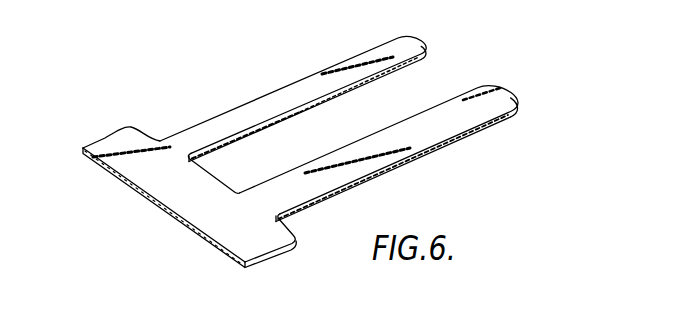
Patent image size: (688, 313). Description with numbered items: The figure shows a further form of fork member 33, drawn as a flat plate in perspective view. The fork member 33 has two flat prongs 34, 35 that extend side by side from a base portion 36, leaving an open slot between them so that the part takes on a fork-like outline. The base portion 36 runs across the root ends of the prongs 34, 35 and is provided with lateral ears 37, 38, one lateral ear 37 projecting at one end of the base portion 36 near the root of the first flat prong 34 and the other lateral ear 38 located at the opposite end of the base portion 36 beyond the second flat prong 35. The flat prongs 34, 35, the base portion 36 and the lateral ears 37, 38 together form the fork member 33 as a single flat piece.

The fork member 33 is at (238, 100).
The flat prong 34 is at (401, 54).
The flat prong 35 is at (509, 97).
The base portion 36 is at (167, 192).
The lateral ear 37 is at (117, 138).
The lateral ear 38 is at (263, 228).